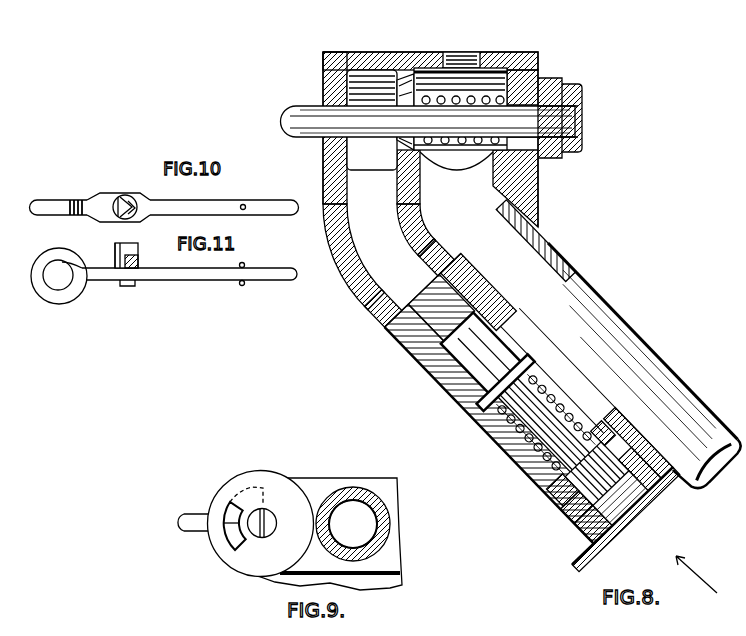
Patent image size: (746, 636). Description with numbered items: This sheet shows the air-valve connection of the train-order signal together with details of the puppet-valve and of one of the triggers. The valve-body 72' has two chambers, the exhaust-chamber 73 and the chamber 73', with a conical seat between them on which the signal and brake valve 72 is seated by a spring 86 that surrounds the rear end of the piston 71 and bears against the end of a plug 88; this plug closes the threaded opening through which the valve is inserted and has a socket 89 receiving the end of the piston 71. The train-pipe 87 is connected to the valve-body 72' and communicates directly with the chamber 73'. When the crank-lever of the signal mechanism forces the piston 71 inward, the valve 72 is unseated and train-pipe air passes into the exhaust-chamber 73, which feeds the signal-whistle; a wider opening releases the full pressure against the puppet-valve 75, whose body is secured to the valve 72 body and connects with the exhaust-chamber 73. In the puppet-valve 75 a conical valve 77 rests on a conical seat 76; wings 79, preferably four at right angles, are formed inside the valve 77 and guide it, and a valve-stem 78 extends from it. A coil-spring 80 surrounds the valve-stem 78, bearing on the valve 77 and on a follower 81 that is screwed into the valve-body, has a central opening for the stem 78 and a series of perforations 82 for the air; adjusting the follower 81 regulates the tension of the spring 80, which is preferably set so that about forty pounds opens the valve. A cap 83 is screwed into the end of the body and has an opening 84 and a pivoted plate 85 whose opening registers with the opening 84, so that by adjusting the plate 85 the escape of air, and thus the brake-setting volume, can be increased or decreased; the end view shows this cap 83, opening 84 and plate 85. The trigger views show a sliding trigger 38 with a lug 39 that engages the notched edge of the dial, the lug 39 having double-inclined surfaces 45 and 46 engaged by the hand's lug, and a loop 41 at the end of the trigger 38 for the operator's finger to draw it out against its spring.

In FIG. 10, the sliding trigger 38 is at (190, 204).
In FIG. 11, the sliding trigger 38 is at (195, 279).
In FIG. 10, the lug 39 is at (121, 196).
In FIG. 11, the lug 39 is at (115, 255).
In FIG. 10, the loop 41 is at (47, 206).
In FIG. 11, the loop 41 is at (54, 292).
In FIG. 10, the double-inclined surface 45 is at (113, 219).
In FIG. 11, the double-inclined surface 45 is at (78, 262).
In FIG. 10, the double-inclined surface 46 is at (133, 219).
In FIG. 11, the double-inclined surface 46 is at (139, 257).
In FIG. 8, the piston 71 is at (287, 113).
In FIG. 8, the signal and brake valve 72 is at (380, 90).
In FIG. 8, the valve-body 72' is at (522, 271).
In FIG. 9, the valve-body 72' is at (353, 534).
In FIG. 8, the exhaust-chamber 73 is at (357, 189).
In FIG. 8, the chamber 73' is at (445, 213).
In FIG. 8, the puppet-valve 75 is at (465, 410).
In FIG. 8, the conical seat 76 is at (481, 428).
In FIG. 8, the conical valve 77 is at (533, 352).
In FIG. 8, the valve-stem 78 is at (548, 440).
In FIG. 8, the wings 79 is at (462, 358).
In FIG. 8, the coil-spring 80 is at (548, 392).
In FIG. 8, the follower 81 is at (553, 493).
In FIG. 8, the perforations 82 is at (605, 432).
In FIG. 8, the cap 83 is at (657, 468).
In FIG. 8, the opening 84 is at (608, 516).
In FIG. 9, the opening 84 is at (238, 504).
In FIG. 8, the pivoted plate 85 is at (584, 566).
In FIG. 9, the pivoted plate 85 is at (228, 556).
In FIG. 8, the spring 86 is at (460, 152).
In FIG. 8, the train-pipe 87 is at (540, 270).
In FIG. 9, the train-pipe 87 is at (341, 491).
In FIG. 8, the plug 88 is at (583, 110).
In FIG. 8, the socket 89 is at (560, 104).